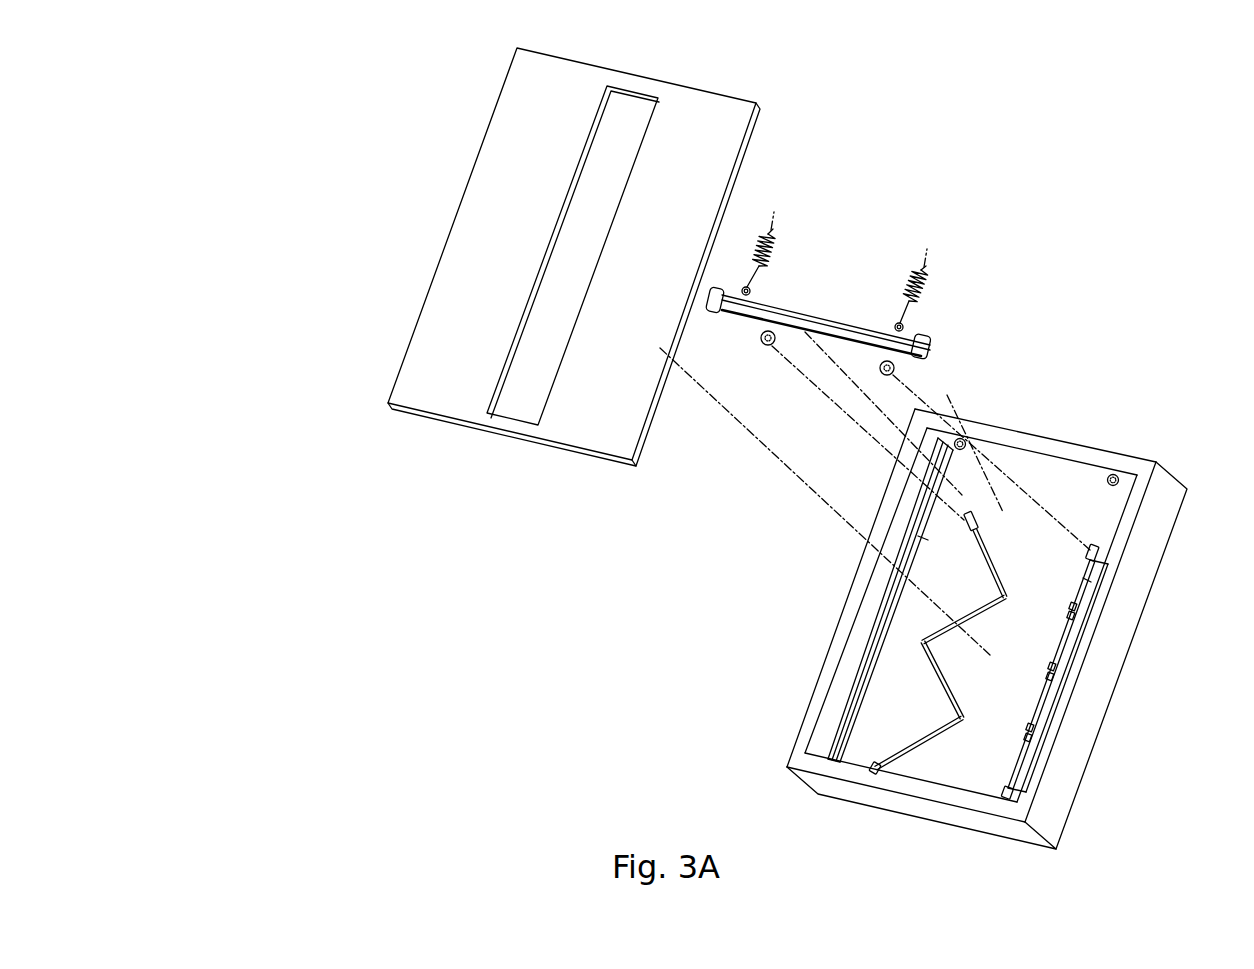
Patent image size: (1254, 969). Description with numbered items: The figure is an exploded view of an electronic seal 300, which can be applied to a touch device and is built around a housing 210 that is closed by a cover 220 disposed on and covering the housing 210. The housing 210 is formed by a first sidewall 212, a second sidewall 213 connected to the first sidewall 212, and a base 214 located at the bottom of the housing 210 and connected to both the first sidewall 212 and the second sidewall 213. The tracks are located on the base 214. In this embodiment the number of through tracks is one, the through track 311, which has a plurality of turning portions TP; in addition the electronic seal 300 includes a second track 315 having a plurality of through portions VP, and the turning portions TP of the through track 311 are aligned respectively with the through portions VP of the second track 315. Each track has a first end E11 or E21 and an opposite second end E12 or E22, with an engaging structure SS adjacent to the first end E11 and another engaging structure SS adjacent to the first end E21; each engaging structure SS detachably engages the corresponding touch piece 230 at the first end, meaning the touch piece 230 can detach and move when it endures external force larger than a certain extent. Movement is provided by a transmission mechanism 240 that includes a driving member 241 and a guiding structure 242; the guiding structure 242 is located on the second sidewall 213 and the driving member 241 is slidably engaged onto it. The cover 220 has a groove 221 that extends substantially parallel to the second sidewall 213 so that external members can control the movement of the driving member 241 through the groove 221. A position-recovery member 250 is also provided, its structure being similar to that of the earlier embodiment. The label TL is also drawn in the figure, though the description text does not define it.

The electronic seal 300 is at (301, 48).
The housing 210 is at (961, 606).
The first sidewall 212 is at (1063, 450).
The second sidewall 213 is at (863, 578).
The base 214 is at (953, 770).
The cover 220 is at (557, 257).
The groove 221 is at (552, 232).
The touch piece 230 is at (895, 371).
The transmission mechanism 240 is at (881, 326).
The driving member 241 is at (932, 348).
The guiding structure 242 is at (868, 652).
The position-recovery member 250 is at (927, 281).
The through track 311 is at (843, 631).
The second track 315 is at (1119, 639).
The first end E11 is at (1092, 548).
The second end E12 is at (1008, 797).
The first end E21 is at (968, 514).
The second end E22 is at (872, 768).
The engaging structure SS is at (1087, 581).
The through portion VP is at (1073, 607).
The turning portion TP is at (1055, 643).
The tangent line TL is at (977, 707).